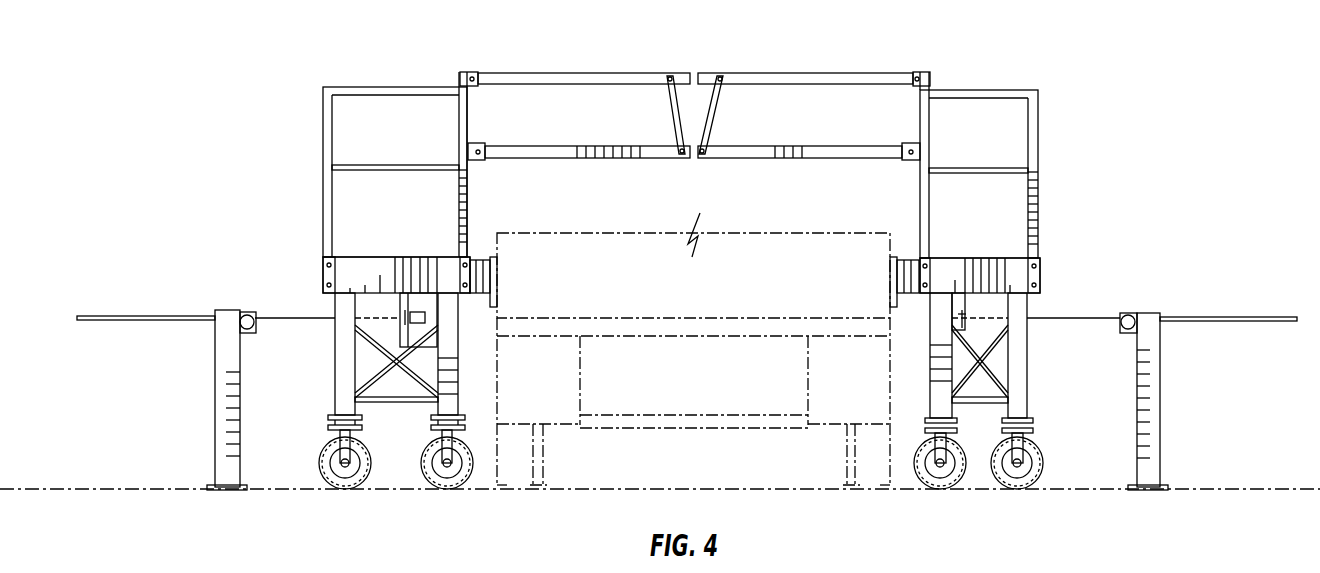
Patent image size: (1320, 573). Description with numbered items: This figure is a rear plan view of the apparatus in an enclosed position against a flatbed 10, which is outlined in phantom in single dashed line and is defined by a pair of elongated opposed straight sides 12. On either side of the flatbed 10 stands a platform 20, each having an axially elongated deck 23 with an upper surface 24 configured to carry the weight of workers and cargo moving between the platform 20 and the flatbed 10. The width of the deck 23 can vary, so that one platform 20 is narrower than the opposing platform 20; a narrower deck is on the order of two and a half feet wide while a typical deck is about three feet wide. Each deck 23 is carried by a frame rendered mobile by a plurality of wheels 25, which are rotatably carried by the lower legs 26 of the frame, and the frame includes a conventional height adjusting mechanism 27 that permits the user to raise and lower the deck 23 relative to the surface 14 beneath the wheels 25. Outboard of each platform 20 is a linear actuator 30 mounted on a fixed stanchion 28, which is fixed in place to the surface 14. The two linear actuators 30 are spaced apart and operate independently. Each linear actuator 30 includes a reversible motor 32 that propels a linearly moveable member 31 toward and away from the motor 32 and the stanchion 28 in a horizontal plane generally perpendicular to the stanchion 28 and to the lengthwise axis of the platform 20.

The flatbed 10 is at (797, 218).
The elongated opposed straight sides 12 is at (497, 245).
The surface 14 is at (130, 483).
The platform 20 is at (282, 162).
The deck 23 is at (348, 268).
The upper surface 24 is at (414, 257).
The wheels 25 is at (442, 478).
The lower legs 26 is at (443, 403).
The height adjusting mechanism 27 is at (393, 360).
The stanchion 28 is at (227, 382).
The linear actuator 30 is at (233, 292).
The linearly moveable member 31 is at (125, 317).
The reversible motor 32 is at (250, 333).